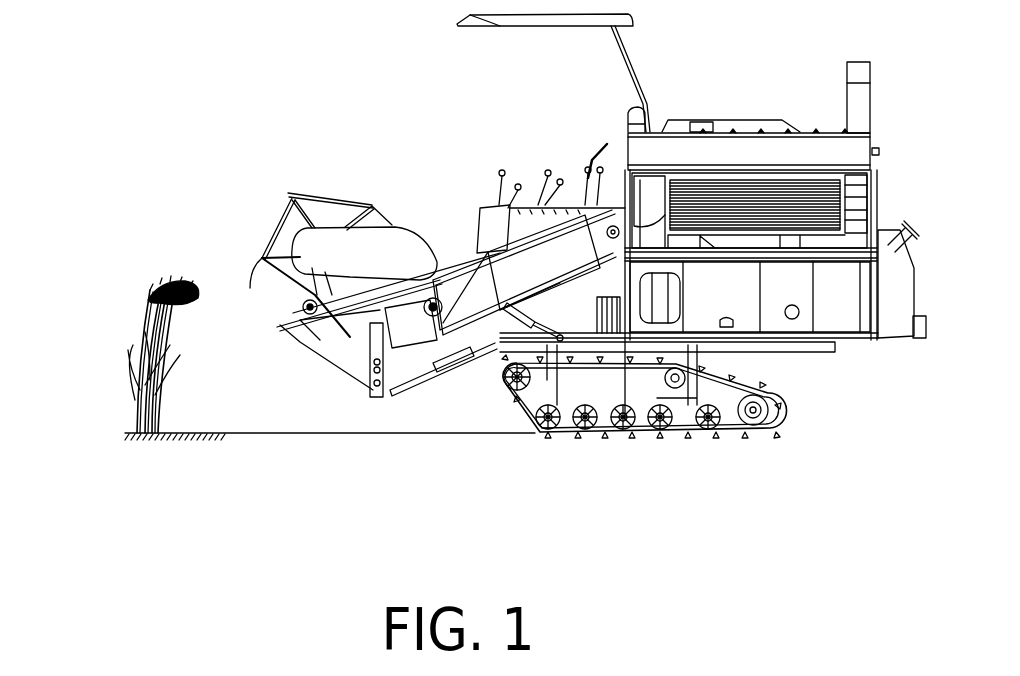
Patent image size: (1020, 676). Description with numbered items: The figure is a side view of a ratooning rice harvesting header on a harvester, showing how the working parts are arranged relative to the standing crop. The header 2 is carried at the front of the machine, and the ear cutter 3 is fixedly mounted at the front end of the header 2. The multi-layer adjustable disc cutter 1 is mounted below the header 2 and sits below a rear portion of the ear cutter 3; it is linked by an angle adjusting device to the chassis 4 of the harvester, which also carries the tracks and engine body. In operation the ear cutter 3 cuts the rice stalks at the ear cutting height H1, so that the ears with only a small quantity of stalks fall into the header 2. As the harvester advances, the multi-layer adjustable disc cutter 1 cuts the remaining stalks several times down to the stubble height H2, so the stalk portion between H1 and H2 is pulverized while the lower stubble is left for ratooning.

The multi-layer adjustable disc cutter 1 is at (372, 387).
The header 2 is at (377, 303).
The ear cutter 3 is at (296, 300).
The chassis 4 is at (782, 350).
The ear cutting height H1 is at (368, 336).
The stubble height H2 is at (370, 374).